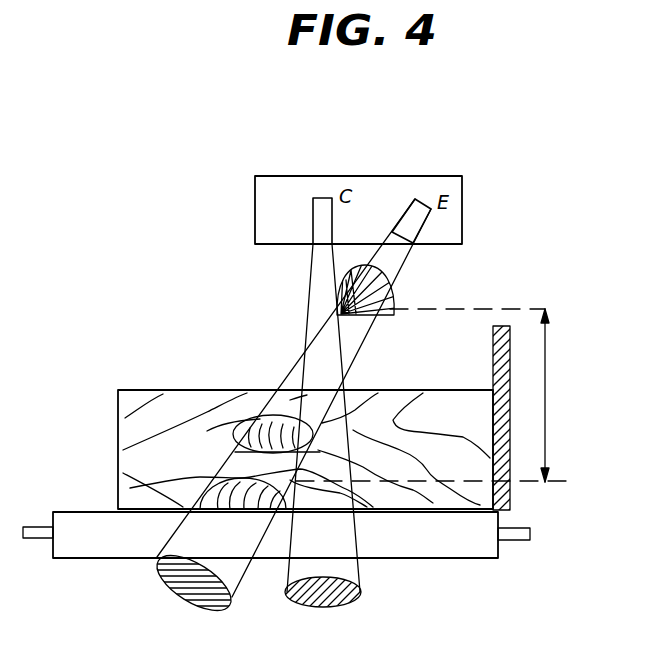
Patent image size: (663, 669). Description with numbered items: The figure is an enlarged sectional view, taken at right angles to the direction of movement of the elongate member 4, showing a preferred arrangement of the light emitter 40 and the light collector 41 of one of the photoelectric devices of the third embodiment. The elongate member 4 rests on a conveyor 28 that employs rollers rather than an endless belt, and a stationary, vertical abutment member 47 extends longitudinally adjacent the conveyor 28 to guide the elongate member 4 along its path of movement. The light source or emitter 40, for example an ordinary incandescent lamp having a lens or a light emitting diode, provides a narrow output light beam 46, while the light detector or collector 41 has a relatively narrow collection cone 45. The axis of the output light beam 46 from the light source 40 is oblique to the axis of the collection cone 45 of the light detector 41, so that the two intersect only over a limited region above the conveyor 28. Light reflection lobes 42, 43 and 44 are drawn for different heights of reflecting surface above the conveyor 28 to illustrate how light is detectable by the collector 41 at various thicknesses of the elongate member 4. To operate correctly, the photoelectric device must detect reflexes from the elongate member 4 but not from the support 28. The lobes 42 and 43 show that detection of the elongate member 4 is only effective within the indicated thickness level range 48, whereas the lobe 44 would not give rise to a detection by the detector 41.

The elongate member 4 is at (135, 459).
The conveyor 28 is at (72, 547).
The light emitter 40 is at (412, 228).
The light collector 41 is at (318, 227).
The light reflection lobe 42 is at (386, 304).
The light reflection lobe 43 is at (252, 428).
The light reflection lobe 44 is at (130, 488).
The collection cone 45 is at (353, 535).
The output light beam 46 is at (247, 580).
The abutment member 47 is at (510, 342).
The thickness level range 48 is at (545, 394).